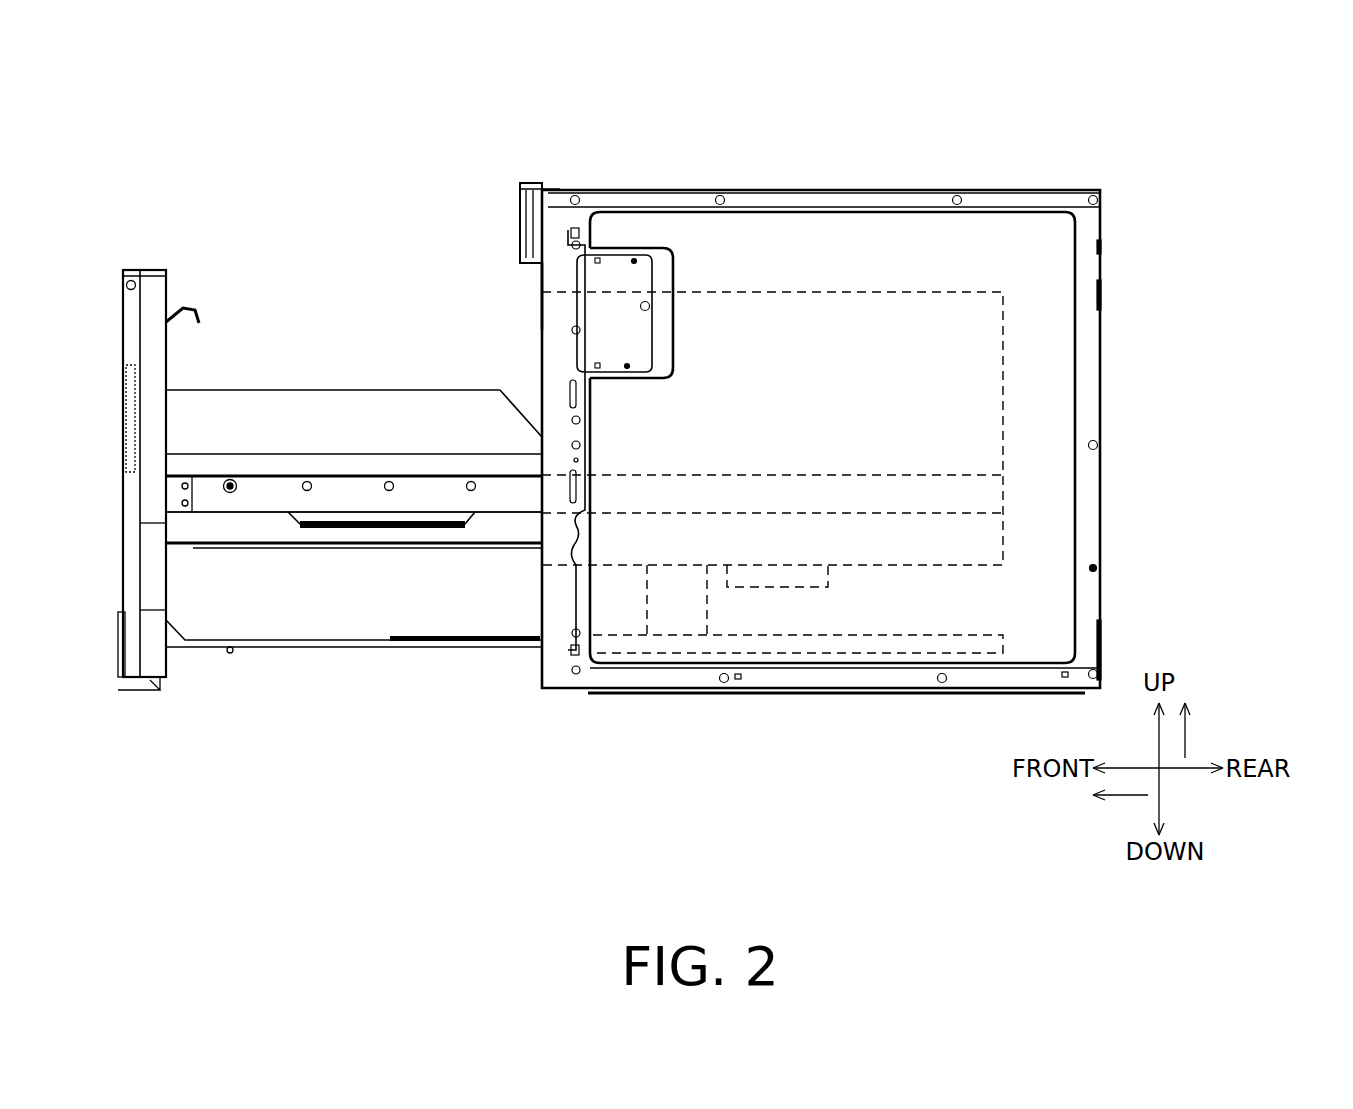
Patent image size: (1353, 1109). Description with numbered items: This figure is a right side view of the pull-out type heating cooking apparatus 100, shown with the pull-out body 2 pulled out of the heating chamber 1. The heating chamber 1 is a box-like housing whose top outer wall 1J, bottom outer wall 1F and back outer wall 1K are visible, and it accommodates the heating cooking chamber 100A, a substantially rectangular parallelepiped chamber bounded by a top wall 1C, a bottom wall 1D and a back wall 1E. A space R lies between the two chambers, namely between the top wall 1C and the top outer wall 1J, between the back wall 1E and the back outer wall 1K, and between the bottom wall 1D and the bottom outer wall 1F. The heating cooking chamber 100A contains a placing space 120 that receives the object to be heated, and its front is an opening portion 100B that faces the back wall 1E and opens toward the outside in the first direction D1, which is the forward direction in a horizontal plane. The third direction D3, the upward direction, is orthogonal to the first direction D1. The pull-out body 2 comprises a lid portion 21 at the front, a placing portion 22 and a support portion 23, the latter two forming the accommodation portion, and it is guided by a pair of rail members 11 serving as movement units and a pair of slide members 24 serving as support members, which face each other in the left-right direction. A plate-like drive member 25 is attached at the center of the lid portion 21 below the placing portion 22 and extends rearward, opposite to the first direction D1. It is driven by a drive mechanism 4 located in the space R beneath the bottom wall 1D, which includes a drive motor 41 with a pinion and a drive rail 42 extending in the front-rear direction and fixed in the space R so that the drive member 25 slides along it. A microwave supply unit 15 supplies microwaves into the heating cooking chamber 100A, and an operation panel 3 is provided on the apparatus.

The pull-out type heating cooking apparatus 100 is at (882, 445).
The heating chamber 1 is at (882, 464).
The heating cooking chamber 100A is at (1005, 358).
The opening portion 100B is at (542, 330).
The top wall 1C is at (778, 290).
The top outer wall 1J is at (862, 190).
The back outer wall 1K is at (1100, 428).
The back wall 1E is at (1003, 505).
The space R is at (1030, 590).
The bottom wall 1D is at (763, 565).
The bottom outer wall 1F is at (835, 692).
The pair of rail members 11 is at (622, 513).
The microwave supply unit 15 is at (812, 588).
The placing space 120 is at (870, 508).
The drive mechanism 4 is at (657, 694).
The drive motor 41 is at (658, 635).
The drive rail 42 is at (677, 655).
The operation panel 3 is at (520, 215).
The pull-out body 2 is at (330, 547).
The lid portion 21 is at (155, 692).
The placing portion 22 is at (280, 548).
The support portion 23 is at (240, 530).
The pair of slide members 24 is at (368, 498).
The drive member 25 is at (456, 706).
The first direction D1 is at (1120, 797).
The third direction D3 is at (1187, 732).